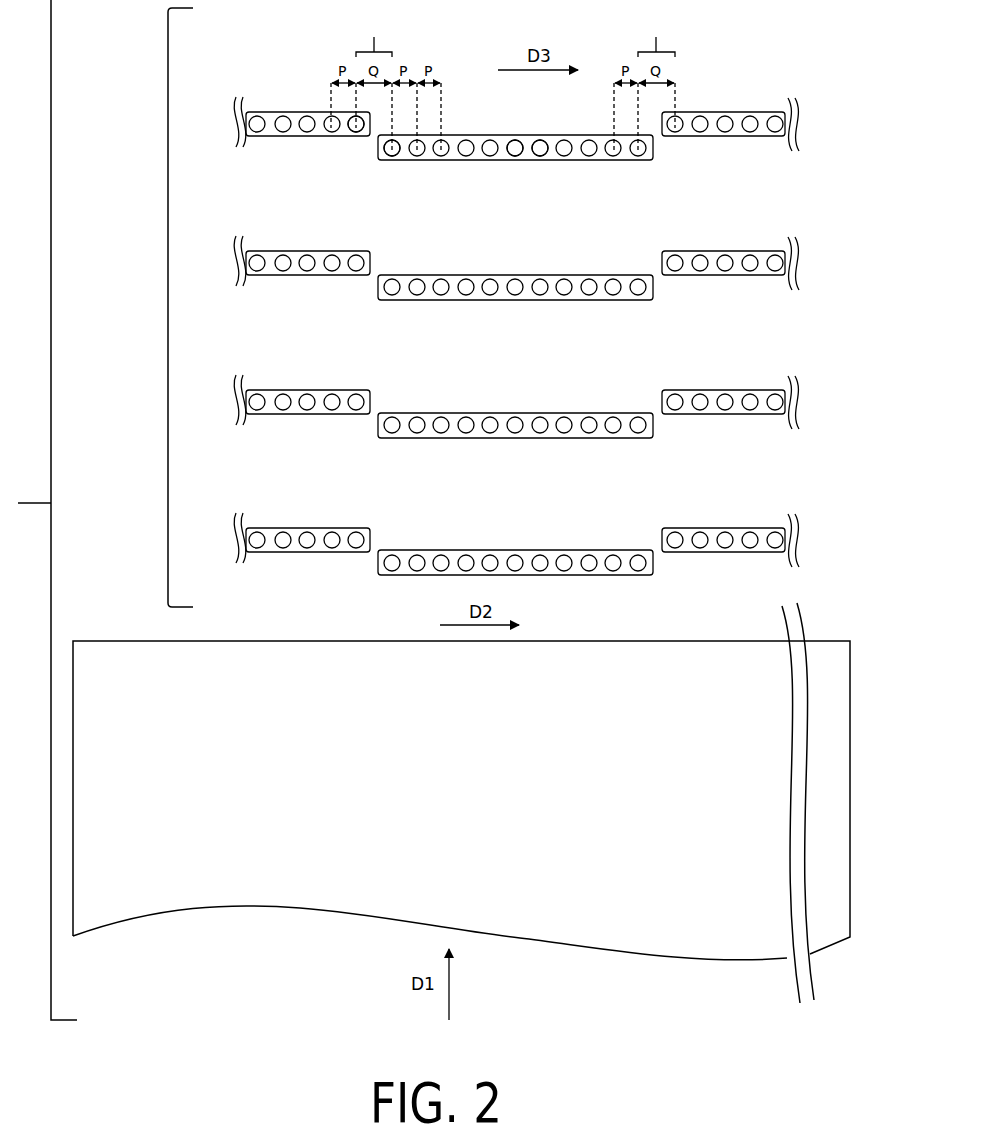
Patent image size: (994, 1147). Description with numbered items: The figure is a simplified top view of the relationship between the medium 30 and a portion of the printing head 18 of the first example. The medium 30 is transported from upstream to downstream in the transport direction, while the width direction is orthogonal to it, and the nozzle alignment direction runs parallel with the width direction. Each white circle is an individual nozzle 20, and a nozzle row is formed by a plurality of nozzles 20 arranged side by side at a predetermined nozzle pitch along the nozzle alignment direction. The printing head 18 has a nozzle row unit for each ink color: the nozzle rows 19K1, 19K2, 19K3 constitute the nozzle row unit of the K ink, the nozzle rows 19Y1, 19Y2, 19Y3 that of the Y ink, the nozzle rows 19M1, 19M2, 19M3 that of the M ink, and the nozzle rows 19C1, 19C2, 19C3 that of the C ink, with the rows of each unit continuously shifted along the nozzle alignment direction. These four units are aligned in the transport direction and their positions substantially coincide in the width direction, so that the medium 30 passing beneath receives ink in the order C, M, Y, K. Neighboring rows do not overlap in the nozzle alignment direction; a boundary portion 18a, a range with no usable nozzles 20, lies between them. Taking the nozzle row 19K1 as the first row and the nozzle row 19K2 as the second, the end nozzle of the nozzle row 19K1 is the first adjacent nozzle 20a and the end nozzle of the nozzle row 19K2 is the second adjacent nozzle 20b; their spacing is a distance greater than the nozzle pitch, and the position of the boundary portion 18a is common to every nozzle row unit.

The printing head 18 is at (168, 303).
The boundary portion 18a is at (515, 36).
The nozzle row 19K1 is at (307, 112).
The nozzle row 19K2 is at (523, 135).
The nozzle row 19K3 is at (713, 112).
The nozzle row 19Y1 is at (280, 251).
The nozzle row 19Y2 is at (523, 275).
The nozzle row 19Y3 is at (712, 251).
The nozzle row 19M1 is at (280, 390).
The nozzle row 19M2 is at (523, 413).
The nozzle row 19M3 is at (712, 390).
The nozzle row 19C1 is at (280, 528).
The nozzle row 19C2 is at (523, 550).
The nozzle row 19C3 is at (712, 528).
The nozzle 20 is at (516, 156).
The first adjacent nozzle 20a is at (354, 133).
The second adjacent nozzle 20b is at (395, 156).
The medium 30 is at (160, 908).